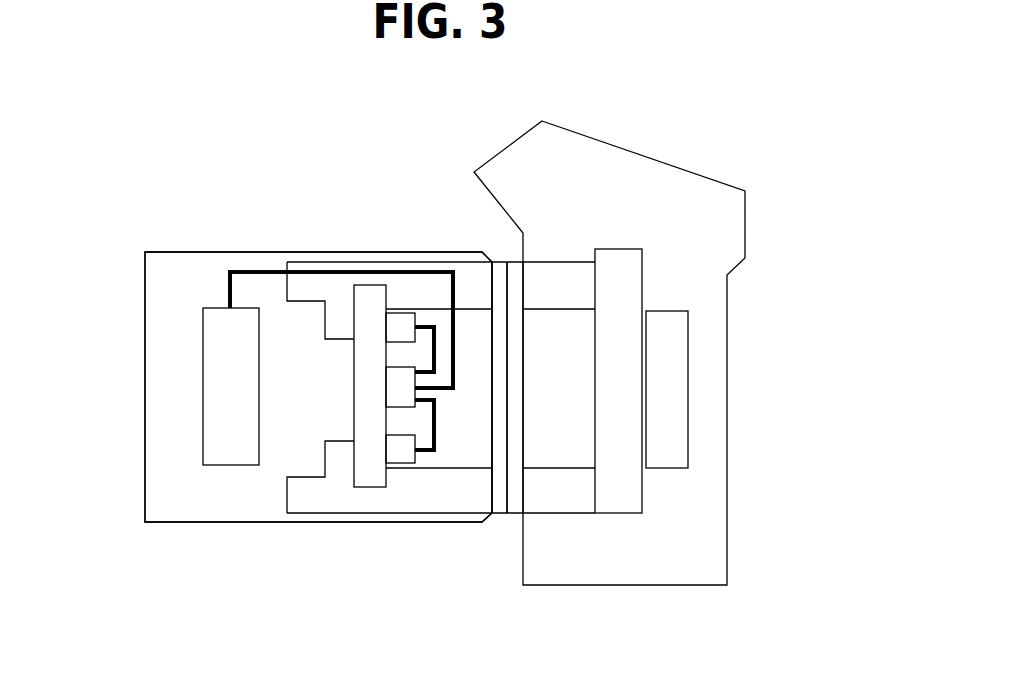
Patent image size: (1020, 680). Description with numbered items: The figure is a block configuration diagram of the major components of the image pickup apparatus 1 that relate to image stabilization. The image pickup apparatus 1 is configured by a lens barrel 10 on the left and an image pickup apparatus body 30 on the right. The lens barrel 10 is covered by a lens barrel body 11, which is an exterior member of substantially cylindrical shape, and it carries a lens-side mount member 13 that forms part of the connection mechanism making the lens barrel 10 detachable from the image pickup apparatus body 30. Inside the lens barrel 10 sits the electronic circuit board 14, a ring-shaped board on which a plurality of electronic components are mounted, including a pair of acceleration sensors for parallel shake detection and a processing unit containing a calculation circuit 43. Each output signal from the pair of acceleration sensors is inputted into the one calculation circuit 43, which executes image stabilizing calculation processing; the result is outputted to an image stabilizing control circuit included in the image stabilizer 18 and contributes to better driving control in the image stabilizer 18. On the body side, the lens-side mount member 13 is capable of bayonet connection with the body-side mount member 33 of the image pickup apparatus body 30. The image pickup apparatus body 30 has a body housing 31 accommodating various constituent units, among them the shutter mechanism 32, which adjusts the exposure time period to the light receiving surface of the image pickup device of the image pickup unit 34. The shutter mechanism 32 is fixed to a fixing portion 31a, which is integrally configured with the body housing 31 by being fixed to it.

The image pickup apparatus 1 is at (113, 170).
The lens barrel 10 is at (287, 217).
The lens barrel body 11 is at (412, 523).
The lens-side mount member 13 is at (500, 511).
The electronic circuit board 14 is at (358, 482).
The image stabilizer 18 is at (232, 453).
The image pickup apparatus body 30 is at (753, 160).
The body housing 31 is at (727, 525).
The fixing portion 31a is at (582, 503).
The shutter mechanism 32 is at (625, 503).
The body-side mount member 33 is at (513, 505).
The image pickup unit 34 is at (670, 458).
The calculation circuit 43 is at (397, 386).